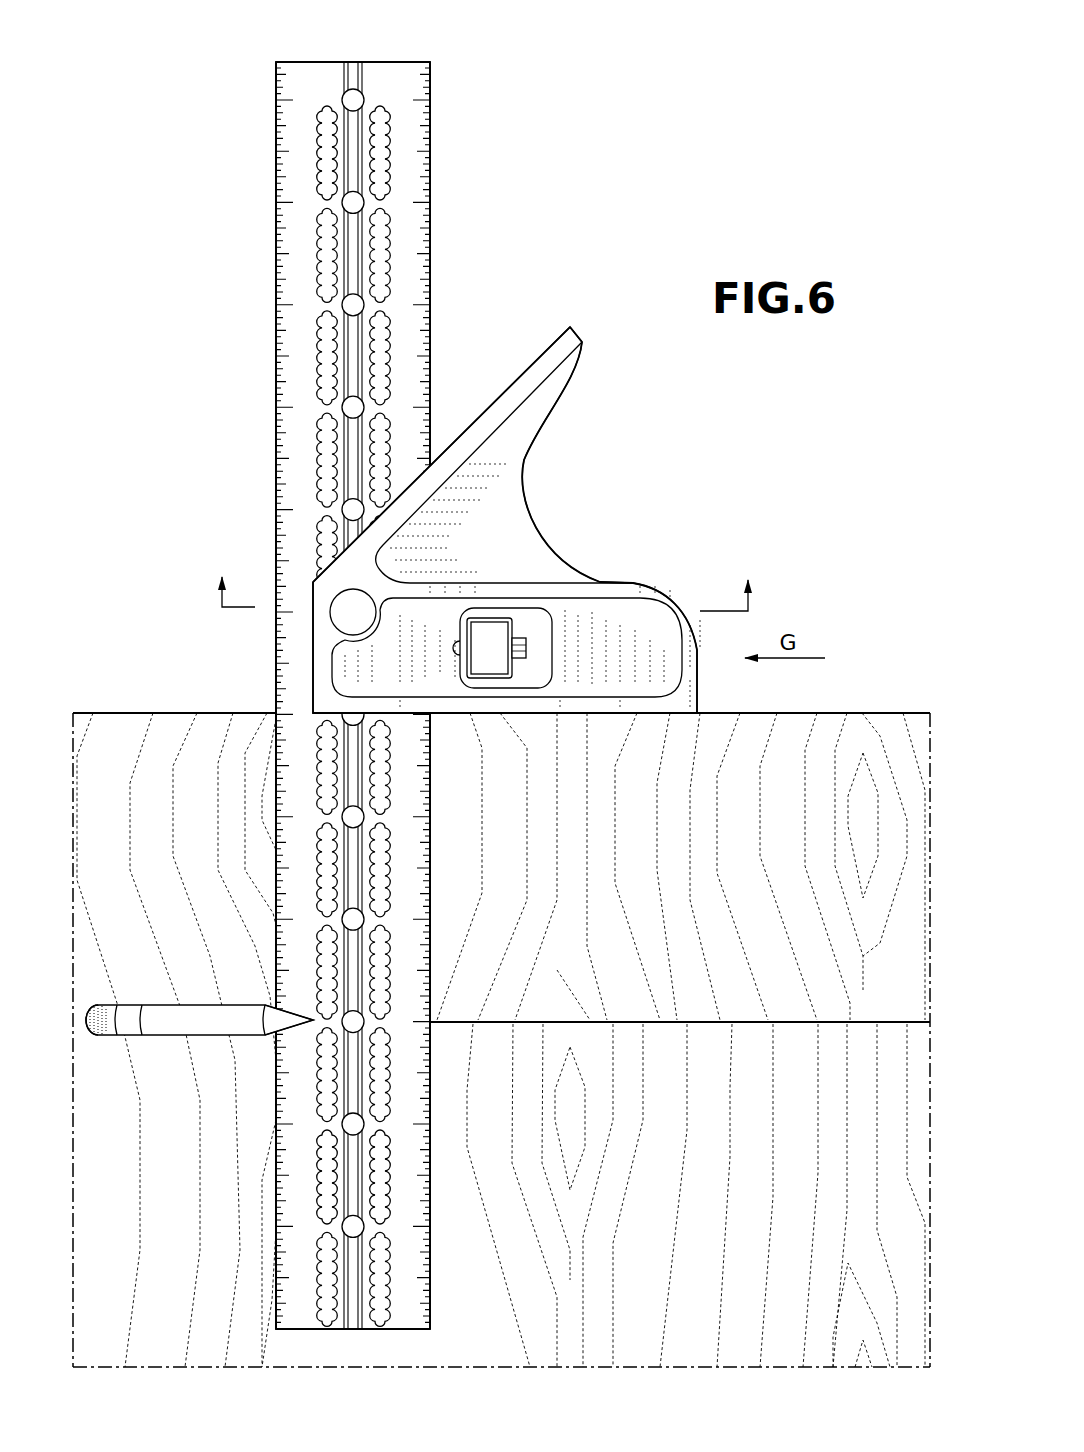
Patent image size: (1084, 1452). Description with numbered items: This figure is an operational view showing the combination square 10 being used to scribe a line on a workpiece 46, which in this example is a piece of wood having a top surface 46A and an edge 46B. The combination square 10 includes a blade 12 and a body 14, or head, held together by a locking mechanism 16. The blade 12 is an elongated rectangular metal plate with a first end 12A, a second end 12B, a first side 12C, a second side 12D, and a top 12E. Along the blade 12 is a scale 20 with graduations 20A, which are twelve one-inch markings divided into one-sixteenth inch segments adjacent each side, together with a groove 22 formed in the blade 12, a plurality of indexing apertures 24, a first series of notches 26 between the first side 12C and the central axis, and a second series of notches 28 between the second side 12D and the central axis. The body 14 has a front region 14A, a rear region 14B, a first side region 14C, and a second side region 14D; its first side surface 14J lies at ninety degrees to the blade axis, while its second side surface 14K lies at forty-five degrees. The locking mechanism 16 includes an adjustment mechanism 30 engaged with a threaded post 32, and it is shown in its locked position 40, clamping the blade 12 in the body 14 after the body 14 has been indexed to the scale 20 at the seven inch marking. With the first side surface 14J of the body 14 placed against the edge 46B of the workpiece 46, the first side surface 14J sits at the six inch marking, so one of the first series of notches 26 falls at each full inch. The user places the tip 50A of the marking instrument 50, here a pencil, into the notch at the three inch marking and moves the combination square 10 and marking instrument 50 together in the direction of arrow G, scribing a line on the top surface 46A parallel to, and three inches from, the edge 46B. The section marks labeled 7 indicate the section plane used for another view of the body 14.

The combination square 10 is at (590, 228).
The blade 12 is at (349, 680).
The first end 12A is at (410, 1330).
The second end 12B is at (330, 62).
The first side 12C is at (276, 118).
The second side 12D is at (430, 152).
The top 12E is at (314, 80).
The body 14 is at (445, 544).
The front region 14A is at (306, 677).
The rear region 14B is at (668, 510).
The first side region 14C is at (583, 718).
The second side region 14D is at (480, 397).
The first side surface 14J is at (638, 716).
The second side surface 14K is at (536, 362).
The locking mechanism 16 is at (499, 691).
The adjustment mechanism 30 is at (499, 691).
The locked position 40 is at (490, 678).
The scale 20 is at (432, 1155).
The graduations 20A is at (288, 437).
The groove 22 is at (346, 163).
The indexing apertures 24 is at (366, 92).
The first series of notches 26 is at (316, 1070).
The second series of notches 28 is at (430, 1062).
The threaded post 32 is at (530, 658).
The workpiece 46 is at (120, 718).
The top surface 46A is at (659, 960).
The edge 46B is at (882, 713).
The marking instrument 50 is at (202, 1028).
The tip 50A is at (318, 1018).
The section line 7- 7 is at (485, 573).